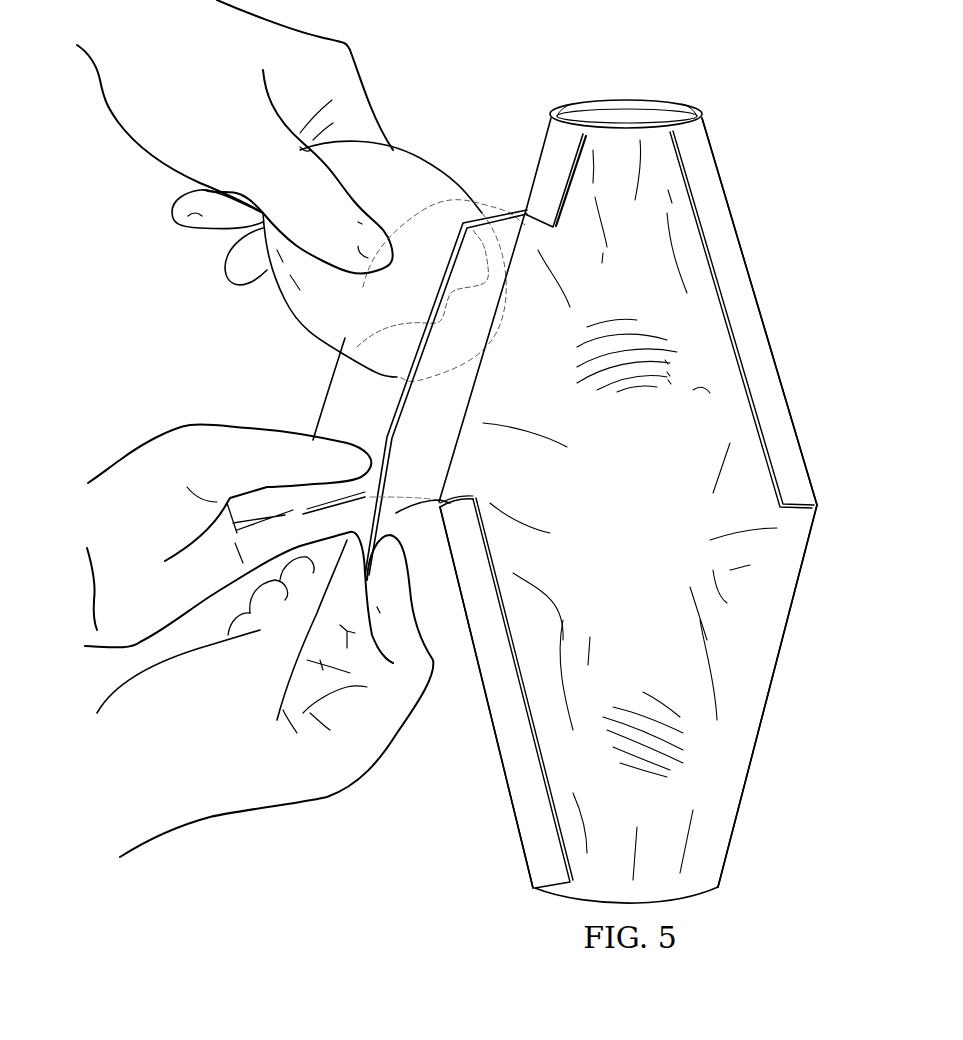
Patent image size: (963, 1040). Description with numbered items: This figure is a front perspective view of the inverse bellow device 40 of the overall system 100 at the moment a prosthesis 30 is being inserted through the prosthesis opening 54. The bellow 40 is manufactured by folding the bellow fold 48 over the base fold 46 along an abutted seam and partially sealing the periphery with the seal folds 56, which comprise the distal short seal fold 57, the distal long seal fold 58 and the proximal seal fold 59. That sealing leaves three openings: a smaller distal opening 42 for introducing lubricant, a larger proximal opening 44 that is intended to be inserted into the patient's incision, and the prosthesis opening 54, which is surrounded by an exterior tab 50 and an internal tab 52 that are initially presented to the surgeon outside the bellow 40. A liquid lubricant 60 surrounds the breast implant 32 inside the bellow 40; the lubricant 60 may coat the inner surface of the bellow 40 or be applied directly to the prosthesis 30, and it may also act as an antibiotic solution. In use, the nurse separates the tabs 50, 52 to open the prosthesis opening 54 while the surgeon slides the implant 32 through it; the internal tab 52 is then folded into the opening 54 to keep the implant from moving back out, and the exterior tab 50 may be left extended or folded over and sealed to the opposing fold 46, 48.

The packaging system 100 is at (628, 448).
The prosthesis 30 is at (424, 160).
The breast implant 32 is at (323, 330).
The inverse bellow device 40 is at (749, 158).
The distal opening 42 is at (609, 93).
The proximal opening 44 is at (730, 890).
The base fold 46 is at (752, 717).
The bellow fold 48 is at (665, 117).
The exterior tab 50 is at (331, 400).
The internal tab 52 is at (397, 514).
The prosthesis opening 54 is at (445, 241).
The seal folds 56 is at (746, 279).
The distal short seal fold 57 is at (546, 162).
The distal long seal fold 58 is at (765, 353).
The proximal seal fold 59 is at (504, 748).
The lubricant 60 is at (386, 331).